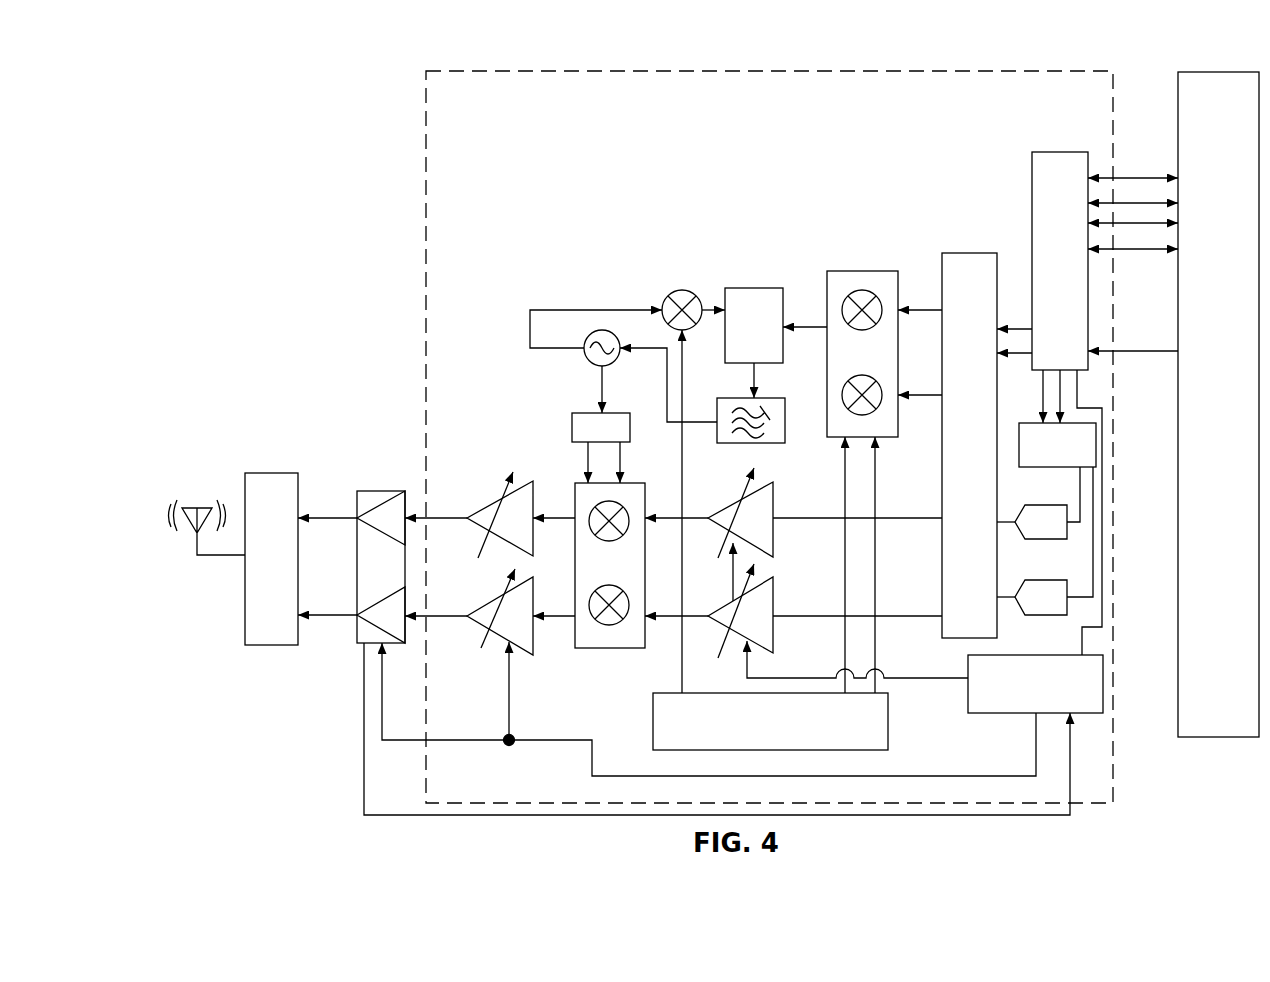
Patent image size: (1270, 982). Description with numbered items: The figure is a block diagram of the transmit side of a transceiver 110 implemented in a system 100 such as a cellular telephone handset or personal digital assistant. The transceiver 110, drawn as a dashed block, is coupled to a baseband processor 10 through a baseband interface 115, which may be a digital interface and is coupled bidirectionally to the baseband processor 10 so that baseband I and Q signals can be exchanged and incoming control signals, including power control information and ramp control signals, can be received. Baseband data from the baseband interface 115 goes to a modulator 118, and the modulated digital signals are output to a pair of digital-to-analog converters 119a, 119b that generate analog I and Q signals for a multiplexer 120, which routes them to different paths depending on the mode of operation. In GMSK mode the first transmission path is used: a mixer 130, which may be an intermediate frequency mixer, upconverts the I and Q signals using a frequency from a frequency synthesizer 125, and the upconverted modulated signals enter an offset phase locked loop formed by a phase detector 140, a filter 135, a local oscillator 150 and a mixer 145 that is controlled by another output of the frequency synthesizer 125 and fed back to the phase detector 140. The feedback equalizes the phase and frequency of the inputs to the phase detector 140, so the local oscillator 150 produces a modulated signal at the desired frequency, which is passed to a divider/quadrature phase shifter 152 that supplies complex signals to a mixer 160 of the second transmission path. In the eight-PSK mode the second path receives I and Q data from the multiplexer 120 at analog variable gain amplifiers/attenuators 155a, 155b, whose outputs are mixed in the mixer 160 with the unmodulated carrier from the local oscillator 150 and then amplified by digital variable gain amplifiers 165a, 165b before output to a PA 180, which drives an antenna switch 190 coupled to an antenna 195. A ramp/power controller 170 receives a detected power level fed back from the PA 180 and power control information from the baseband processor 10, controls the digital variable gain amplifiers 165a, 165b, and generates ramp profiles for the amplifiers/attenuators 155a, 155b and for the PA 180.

The system 100 is at (300, 58).
The transceiver 110 is at (715, 71).
The baseband processor 10 is at (1222, 72).
The baseband interface 115 is at (1060, 152).
The multiplexer 120 is at (963, 253).
The mixer 130 is at (863, 271).
The phase detector 140 is at (750, 288).
The mixer 145 is at (690, 293).
The local oscillator 150 is at (594, 333).
The divider/quadrature phase shifter 152 is at (584, 412).
The filter 135 is at (765, 443).
The mixer 160 is at (605, 648).
The analog variable gain amplifier/attenuator 155a is at (773, 540).
The analog variable gain amplifier/attenuator 155b is at (773, 632).
The digital variable gain amplifier 165a is at (490, 505).
The digital variable gain amplifier 165b is at (490, 631).
The PA 180 is at (369, 491).
The antenna switch 190 is at (275, 473).
The antenna 195 is at (192, 508).
The modulator 118 is at (1096, 447).
The digital-to-analog converter 119a is at (1068, 513).
The digital-to-analog converter 119b is at (1068, 588).
The ramp/power controller 170 is at (1103, 690).
The frequency synthesizer 125 is at (888, 720).